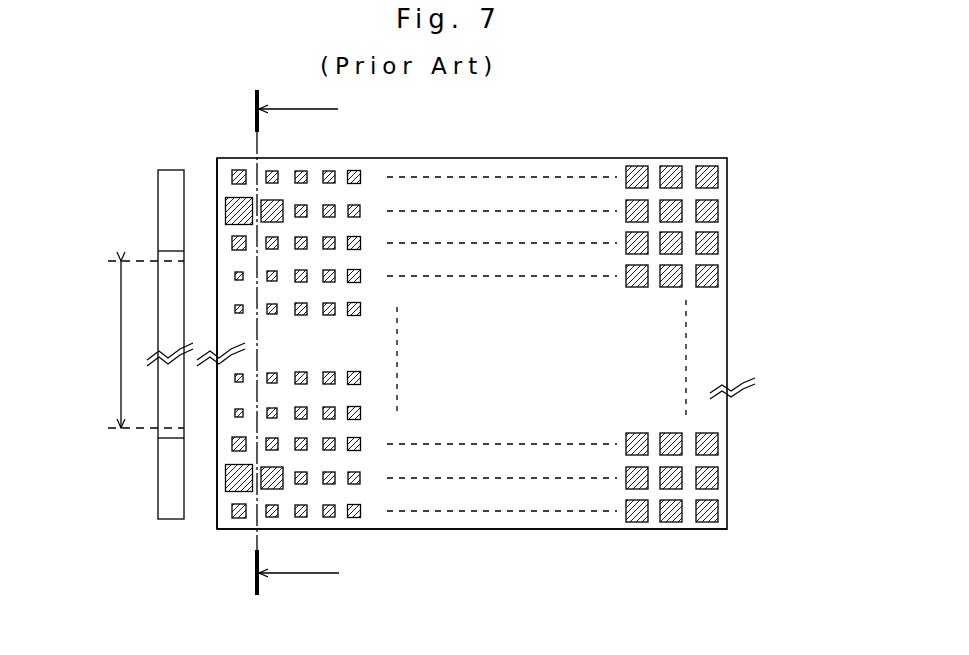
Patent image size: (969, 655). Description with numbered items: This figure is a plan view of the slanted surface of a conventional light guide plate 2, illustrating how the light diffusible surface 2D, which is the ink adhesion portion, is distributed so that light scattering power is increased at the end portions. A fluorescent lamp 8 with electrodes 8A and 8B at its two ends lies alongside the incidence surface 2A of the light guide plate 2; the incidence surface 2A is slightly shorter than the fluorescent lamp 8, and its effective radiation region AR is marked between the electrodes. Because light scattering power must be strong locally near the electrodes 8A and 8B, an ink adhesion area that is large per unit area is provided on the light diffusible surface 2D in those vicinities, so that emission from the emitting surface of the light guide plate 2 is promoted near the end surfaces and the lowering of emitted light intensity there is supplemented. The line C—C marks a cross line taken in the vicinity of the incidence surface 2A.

The light guide plate 2 is at (468, 518).
The incidence surface 2A is at (216, 172).
The light diffusible surface 2D is at (546, 518).
The fluorescent lamp 8 is at (182, 537).
The electrode 8A is at (170, 217).
The electrode 8B is at (170, 483).
The effective radiation region AR is at (136, 344).
The line C— C is at (298, 349).